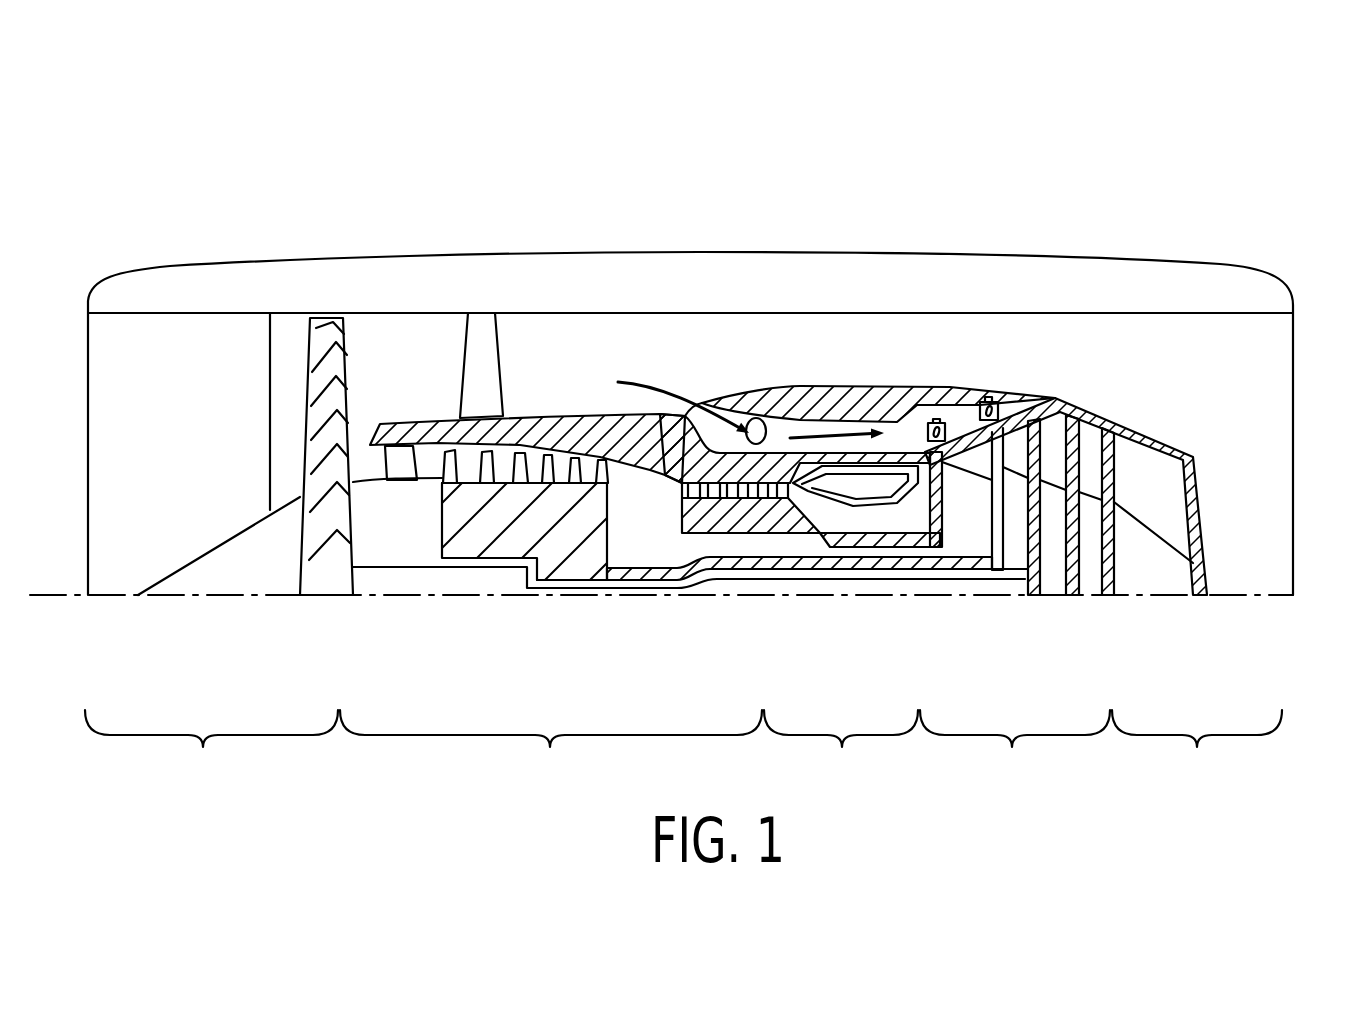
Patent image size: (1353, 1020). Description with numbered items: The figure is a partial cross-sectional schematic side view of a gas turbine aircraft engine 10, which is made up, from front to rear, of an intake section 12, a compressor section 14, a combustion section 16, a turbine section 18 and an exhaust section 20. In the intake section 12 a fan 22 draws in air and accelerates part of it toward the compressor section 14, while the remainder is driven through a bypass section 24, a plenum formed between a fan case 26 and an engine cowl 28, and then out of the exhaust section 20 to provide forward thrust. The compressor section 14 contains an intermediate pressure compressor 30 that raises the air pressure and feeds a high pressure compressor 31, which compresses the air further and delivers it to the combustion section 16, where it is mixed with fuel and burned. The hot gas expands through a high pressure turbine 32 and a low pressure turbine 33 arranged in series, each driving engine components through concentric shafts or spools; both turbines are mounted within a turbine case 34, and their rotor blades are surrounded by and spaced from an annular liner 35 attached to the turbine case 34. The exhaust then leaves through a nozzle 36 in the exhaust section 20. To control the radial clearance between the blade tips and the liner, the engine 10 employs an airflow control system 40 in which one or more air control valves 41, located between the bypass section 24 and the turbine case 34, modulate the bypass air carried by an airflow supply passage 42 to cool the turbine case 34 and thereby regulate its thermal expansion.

The gas turbine aircraft engine 10 is at (150, 117).
The intake section 12 is at (211, 747).
The compressor section 14 is at (551, 747).
The combustion section 16 is at (841, 747).
The turbine section 18 is at (1015, 747).
The exhaust section 20 is at (1197, 747).
The fan 22 is at (307, 573).
The bypass section 24 is at (567, 353).
The fan case 26 is at (440, 252).
The engine cowl 28 is at (803, 400).
The intermediate pressure compressor 30 is at (487, 543).
The high pressure compressor 31 is at (722, 527).
The high pressure turbine 32 is at (947, 513).
The low pressure turbine 33 is at (1008, 530).
The turbine case 34 is at (993, 400).
The annular liner 35 is at (977, 440).
The nozzle 36 is at (1178, 498).
The airflow control system 40 is at (957, 385).
The air control valve 41 is at (927, 417).
The airflow supply passage 42 is at (780, 420).